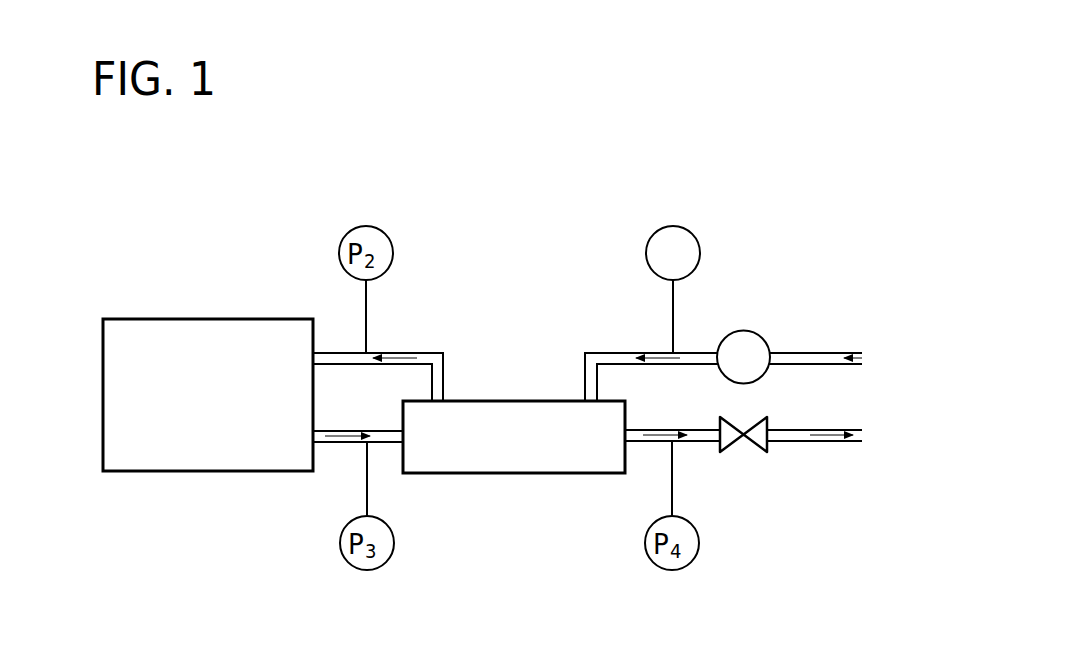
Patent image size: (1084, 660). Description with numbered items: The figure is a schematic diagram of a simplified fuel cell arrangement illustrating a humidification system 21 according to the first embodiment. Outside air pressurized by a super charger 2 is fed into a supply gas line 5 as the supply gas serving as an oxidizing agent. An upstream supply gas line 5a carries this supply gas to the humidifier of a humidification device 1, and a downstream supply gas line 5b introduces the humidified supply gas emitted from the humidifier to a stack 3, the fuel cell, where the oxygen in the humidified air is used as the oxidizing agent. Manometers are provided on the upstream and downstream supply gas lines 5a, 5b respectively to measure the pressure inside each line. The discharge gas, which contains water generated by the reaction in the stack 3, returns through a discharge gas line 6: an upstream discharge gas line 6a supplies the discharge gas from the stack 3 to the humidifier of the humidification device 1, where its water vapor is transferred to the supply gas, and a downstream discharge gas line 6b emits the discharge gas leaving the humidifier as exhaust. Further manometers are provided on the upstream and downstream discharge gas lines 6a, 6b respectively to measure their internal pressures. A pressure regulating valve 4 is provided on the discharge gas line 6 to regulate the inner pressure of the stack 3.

The humidification device 1 is at (513, 386).
The super charger 2 is at (762, 340).
The stack 3 is at (216, 318).
The pressure regulating valve 4 is at (767, 448).
The supply gas line 5 is at (587, 344).
The supply gas line 5a is at (605, 352).
The supply gas line 5b is at (407, 352).
The discharge gas line 6 is at (620, 473).
The discharge gas line 6a is at (333, 444).
The discharge gas line 6b is at (644, 443).
The humidification system 21 is at (716, 251).